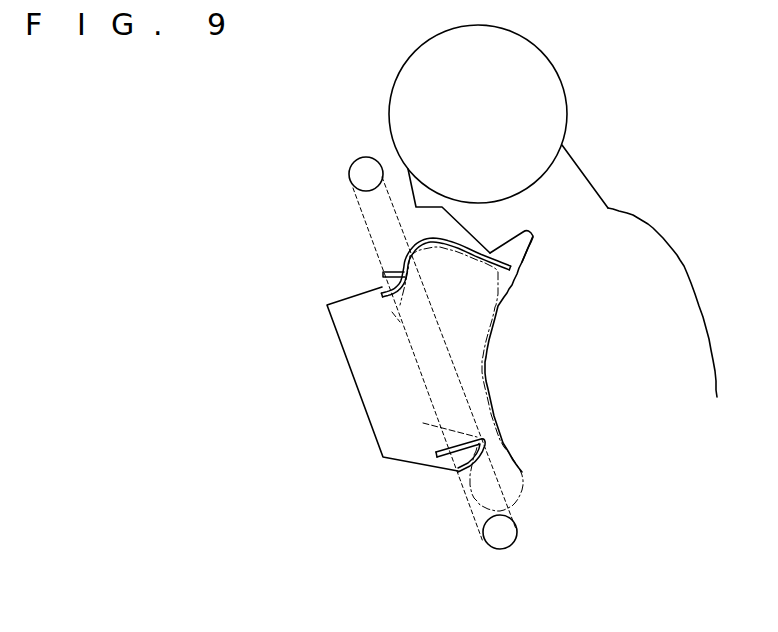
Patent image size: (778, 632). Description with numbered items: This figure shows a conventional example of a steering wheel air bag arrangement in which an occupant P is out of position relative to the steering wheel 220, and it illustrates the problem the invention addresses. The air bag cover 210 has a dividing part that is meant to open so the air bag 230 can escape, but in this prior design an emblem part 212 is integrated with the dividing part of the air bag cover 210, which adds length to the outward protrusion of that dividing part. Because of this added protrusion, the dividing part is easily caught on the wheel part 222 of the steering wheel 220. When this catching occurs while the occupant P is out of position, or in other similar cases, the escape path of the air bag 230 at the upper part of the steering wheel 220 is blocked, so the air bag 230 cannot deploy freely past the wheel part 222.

The occupant P is at (541, 49).
The air bag cover 210 is at (412, 251).
The emblem part 212 is at (512, 284).
The steering wheel 220 is at (510, 553).
The wheel part 222 is at (360, 156).
The air bag 230 is at (480, 362).